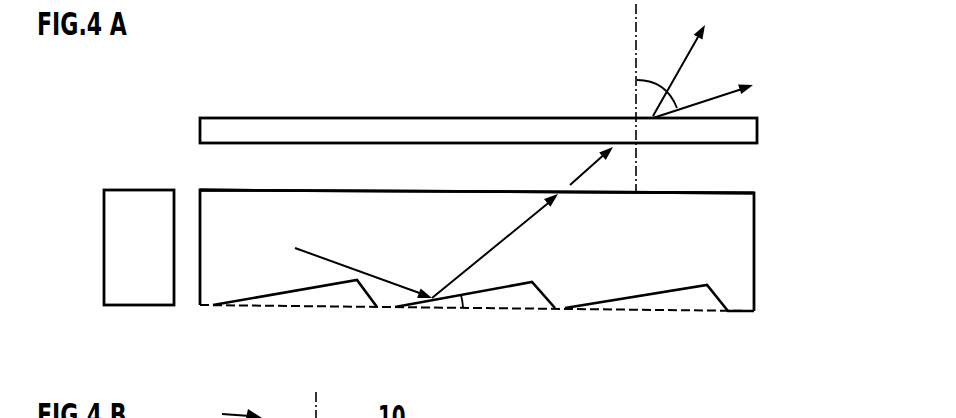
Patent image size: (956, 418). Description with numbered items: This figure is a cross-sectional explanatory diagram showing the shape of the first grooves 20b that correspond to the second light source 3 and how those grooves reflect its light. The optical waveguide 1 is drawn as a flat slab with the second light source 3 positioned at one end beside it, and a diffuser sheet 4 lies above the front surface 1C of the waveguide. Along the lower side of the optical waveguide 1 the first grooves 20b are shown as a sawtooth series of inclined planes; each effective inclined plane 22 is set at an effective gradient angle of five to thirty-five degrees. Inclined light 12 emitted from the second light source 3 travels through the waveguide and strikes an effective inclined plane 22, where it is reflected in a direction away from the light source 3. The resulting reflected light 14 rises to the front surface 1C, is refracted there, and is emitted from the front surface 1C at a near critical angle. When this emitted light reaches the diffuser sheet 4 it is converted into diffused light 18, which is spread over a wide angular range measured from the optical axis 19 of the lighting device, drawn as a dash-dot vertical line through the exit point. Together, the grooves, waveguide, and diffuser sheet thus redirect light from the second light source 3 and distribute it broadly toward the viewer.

The optical waveguide 1 is at (733, 295).
The front surface 1C is at (721, 193).
The second light source 3 is at (133, 188).
The diffuser sheet 4 is at (758, 130).
The inclined light 12 is at (337, 262).
The reflected light 14 is at (482, 257).
The diffused light 18 is at (710, 97).
The optical axis 19 is at (635, 55).
The first grooves 20b is at (510, 340).
The effective inclined plane 22 is at (510, 283).